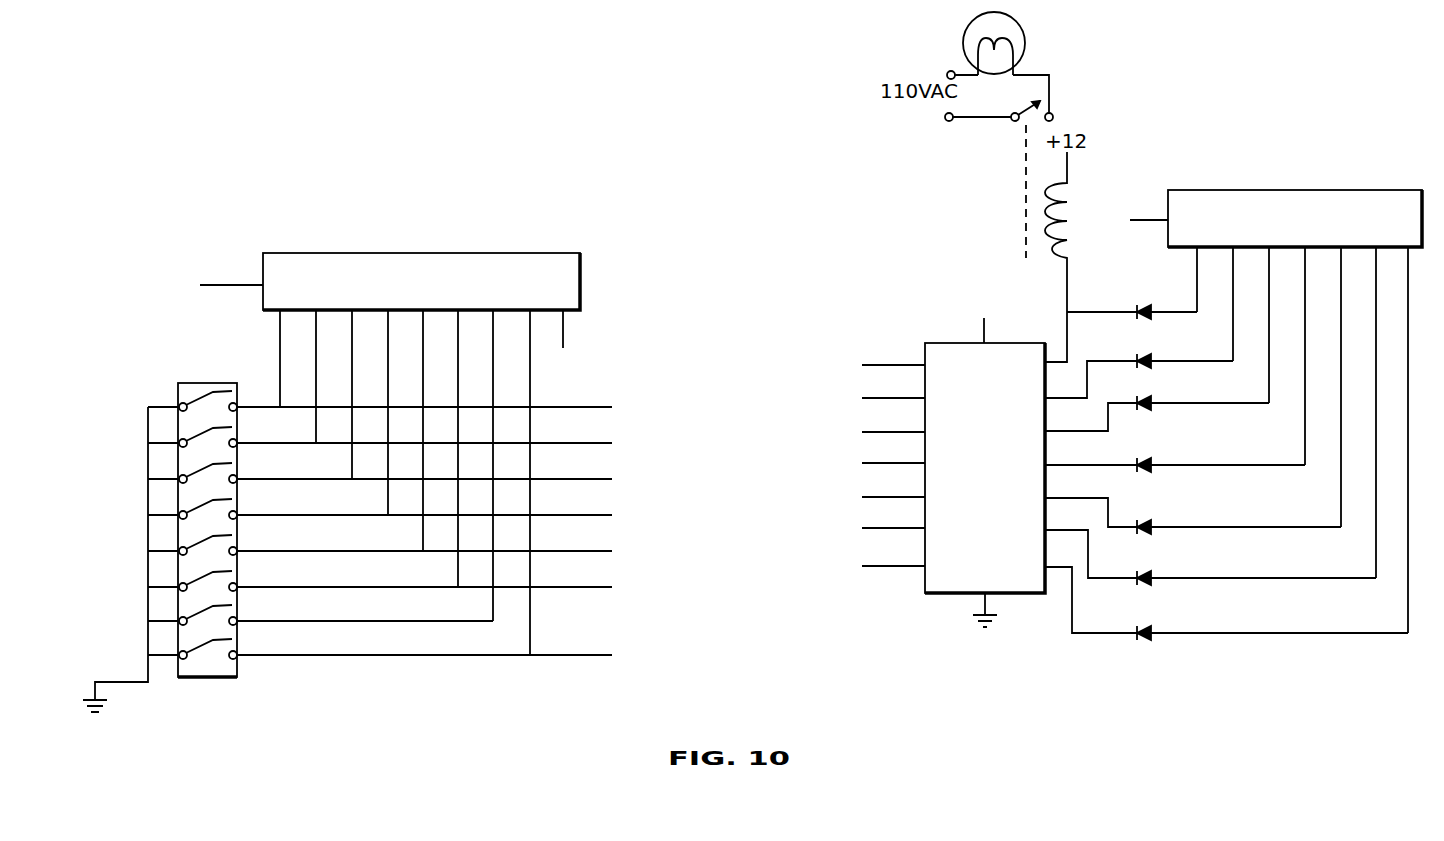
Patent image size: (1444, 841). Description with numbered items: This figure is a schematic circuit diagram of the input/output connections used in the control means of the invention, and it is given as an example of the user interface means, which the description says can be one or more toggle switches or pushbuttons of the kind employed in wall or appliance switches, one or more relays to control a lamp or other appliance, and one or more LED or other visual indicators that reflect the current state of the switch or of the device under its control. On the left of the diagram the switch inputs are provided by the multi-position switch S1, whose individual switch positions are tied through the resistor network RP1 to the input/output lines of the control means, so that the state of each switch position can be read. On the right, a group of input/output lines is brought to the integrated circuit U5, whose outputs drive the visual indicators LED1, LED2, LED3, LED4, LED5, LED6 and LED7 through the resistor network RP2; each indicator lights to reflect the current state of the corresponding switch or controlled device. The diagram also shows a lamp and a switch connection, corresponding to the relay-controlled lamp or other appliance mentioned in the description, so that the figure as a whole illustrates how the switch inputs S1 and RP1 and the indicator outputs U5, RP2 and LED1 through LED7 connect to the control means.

The resistor pack RP1 (SIP10P 10K) RP1 is at (379, 454).
The DIP switch S1 (DIPSW16) S1 is at (355, 537).
The resistor pack RP2 (SIP8P 390) RP2 is at (1261, 411).
The driver IC U5 (SN75469) U5 is at (933, 449).
The light emitting diode LED1 is at (1132, 297).
The light emitting diode LED2 is at (1139, 361).
The light emitting diode LED3 is at (1157, 399).
The light emitting diode LED4 is at (1175, 449).
The light emitting diode LED5 is at (1193, 509).
The light emitting diode LED6 is at (1210, 557).
The light emitting diode LED7 is at (1226, 603).